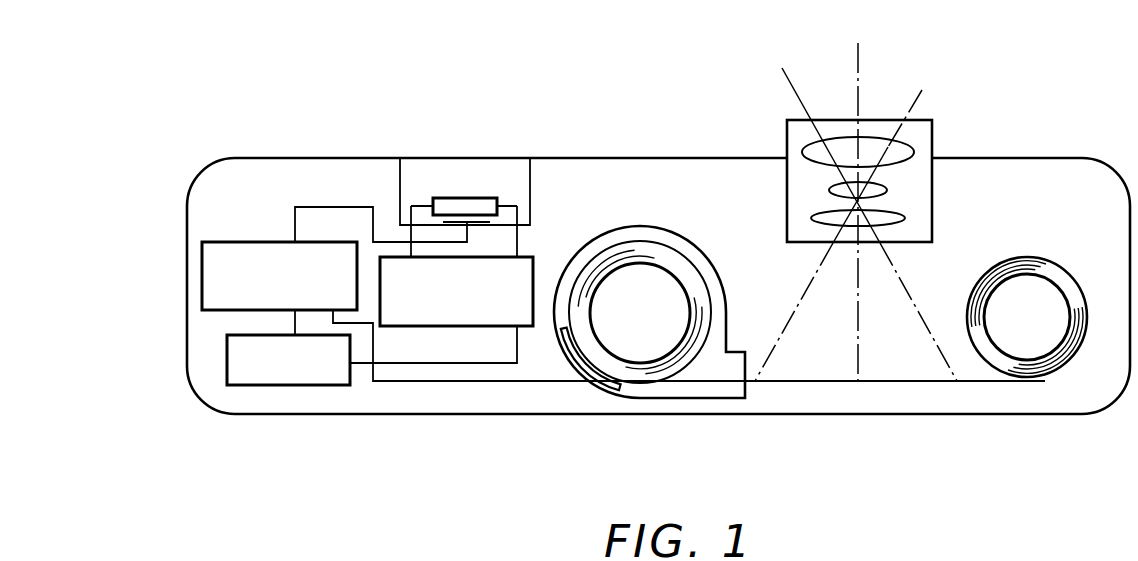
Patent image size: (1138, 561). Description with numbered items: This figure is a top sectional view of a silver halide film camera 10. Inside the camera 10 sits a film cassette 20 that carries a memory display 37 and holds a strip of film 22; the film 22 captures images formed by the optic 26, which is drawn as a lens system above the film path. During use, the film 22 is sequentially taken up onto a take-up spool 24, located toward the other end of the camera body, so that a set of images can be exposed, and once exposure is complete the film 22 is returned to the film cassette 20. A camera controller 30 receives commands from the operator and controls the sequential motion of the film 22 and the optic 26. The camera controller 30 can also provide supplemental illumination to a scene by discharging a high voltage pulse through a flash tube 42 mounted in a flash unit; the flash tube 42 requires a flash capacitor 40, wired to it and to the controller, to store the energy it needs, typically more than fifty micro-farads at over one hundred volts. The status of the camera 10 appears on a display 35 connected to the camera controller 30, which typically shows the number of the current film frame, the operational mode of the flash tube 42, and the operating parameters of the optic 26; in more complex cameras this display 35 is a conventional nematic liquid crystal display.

The silver halide film camera 10 is at (233, 138).
The film cassette 20 is at (623, 399).
The film 22 is at (885, 381).
The take-up spool 24 is at (1064, 372).
The optic 26 is at (920, 187).
The camera controller 30 is at (202, 281).
The display 35 is at (275, 385).
The memory display 37 is at (597, 390).
The flash capacitor 40 is at (447, 326).
The flash tube 42 is at (469, 198).